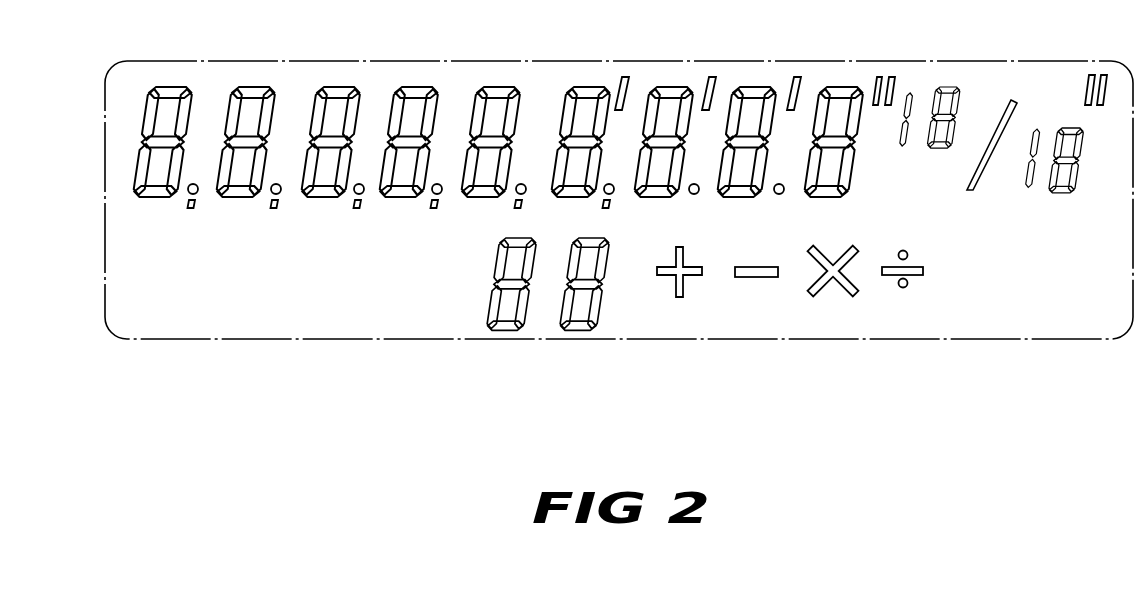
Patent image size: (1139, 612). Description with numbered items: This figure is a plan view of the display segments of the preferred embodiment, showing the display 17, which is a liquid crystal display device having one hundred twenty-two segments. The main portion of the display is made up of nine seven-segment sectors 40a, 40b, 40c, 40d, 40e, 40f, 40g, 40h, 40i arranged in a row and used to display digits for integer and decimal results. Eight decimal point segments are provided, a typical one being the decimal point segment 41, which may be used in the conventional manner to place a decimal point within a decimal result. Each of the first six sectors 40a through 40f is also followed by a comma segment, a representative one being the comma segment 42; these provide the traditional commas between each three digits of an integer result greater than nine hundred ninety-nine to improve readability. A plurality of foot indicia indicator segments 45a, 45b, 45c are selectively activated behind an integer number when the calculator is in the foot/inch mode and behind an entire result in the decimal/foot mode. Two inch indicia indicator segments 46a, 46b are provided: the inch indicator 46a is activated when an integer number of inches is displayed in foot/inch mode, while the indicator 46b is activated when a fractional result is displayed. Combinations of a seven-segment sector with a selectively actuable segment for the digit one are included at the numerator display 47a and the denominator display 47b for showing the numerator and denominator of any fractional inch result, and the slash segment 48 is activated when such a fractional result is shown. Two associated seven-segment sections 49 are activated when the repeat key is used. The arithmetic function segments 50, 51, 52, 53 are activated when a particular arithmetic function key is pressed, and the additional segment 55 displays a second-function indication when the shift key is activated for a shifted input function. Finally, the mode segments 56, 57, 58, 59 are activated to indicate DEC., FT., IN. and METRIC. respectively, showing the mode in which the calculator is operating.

The display 17 is at (325, 62).
The 7-segment sector 40a is at (148, 100).
The 7-segment sector 40b is at (231, 100).
The 7-segment sector 40c is at (316, 100).
The 7-segment sector 40d is at (392, 99).
The 7-segment sector 40e is at (475, 99).
The 7-segment sector 40f is at (563, 98).
The 7-segment sector 40g is at (650, 99).
The 7-segment sector 40h is at (732, 98).
The 7-segment sector 40i is at (819, 98).
The decimal point segment 41 is at (271, 194).
The comma segment 42 is at (352, 205).
The foot indicia indicator segment 45a is at (619, 111).
The foot indicia indicator segment 45b is at (706, 111).
The foot indicia indicator segment 45c is at (792, 111).
The inch indicia indicator segment 46a is at (878, 113).
The inch indicia indicator segment 46b is at (1086, 104).
The numerator display combination 47a is at (913, 160).
The denominator display combination 47b is at (1037, 183).
The slash segment 48 is at (971, 178).
The associated 7-segment sections 49 is at (612, 290).
The arithmetic function segment 50 is at (679, 291).
The arithmetic function segment 51 is at (744, 280).
The arithmetic function segment 52 is at (833, 290).
The arithmetic function segment 53 is at (892, 285).
The 2ND indication segment 55 is at (985, 298).
The DEC. indication segment 56 is at (130, 318).
The FT. indication segment 57 is at (283, 322).
The IN. indication segment 58 is at (385, 325).
The METRIC. indication segment 59 is at (128, 250).